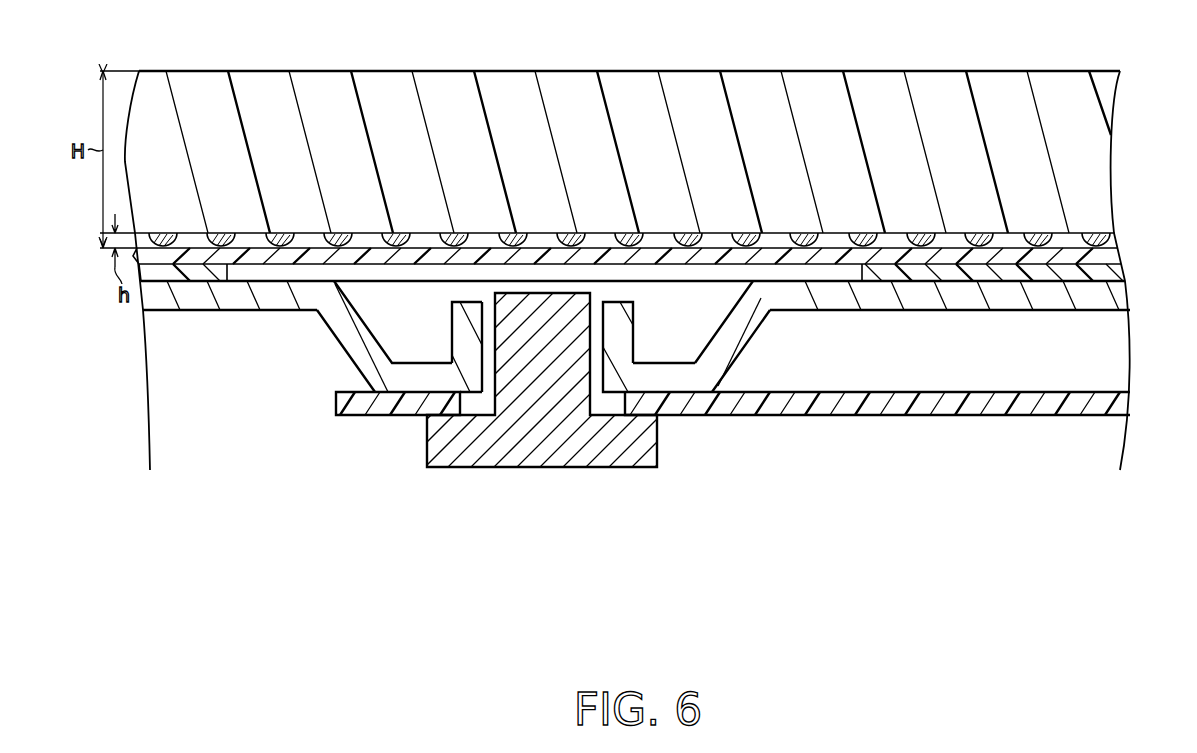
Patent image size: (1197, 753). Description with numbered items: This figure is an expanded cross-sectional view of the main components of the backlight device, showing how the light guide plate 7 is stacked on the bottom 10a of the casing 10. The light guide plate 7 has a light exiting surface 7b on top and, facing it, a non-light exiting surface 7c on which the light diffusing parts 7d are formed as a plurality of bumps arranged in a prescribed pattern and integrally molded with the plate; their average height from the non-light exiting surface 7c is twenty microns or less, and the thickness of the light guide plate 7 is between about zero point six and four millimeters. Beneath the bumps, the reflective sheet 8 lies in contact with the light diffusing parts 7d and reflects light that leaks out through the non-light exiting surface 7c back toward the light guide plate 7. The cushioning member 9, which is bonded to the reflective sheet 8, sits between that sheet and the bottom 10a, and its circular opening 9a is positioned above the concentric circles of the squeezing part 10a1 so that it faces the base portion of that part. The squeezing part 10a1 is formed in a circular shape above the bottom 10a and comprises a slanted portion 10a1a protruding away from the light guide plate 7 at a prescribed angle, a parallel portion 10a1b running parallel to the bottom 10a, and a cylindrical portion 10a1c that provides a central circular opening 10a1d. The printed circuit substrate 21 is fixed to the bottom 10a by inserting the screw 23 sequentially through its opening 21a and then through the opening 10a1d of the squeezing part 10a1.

The light guide plate 7 is at (1079, 159).
The light exiting surface 7b is at (637, 70).
The non-light exiting surface 7c is at (1116, 233).
The light diffusing parts 7d is at (221, 245).
The reflective sheet 8 is at (1106, 256).
The cushioning member 9 is at (1001, 268).
The opening 9a is at (404, 274).
The casing 10 is at (948, 311).
The bottom 10a is at (1086, 292).
The squeezing part 10a1 is at (753, 342).
The slanted portion 10a1a is at (723, 356).
The parallel portion 10a1b is at (658, 366).
The cylindrical portion 10a1c is at (468, 342).
The circular opening 10a1d is at (487, 354).
The printed circuit substrate 21 is at (869, 416).
The opening 21a is at (610, 409).
The screw 23 is at (541, 428).